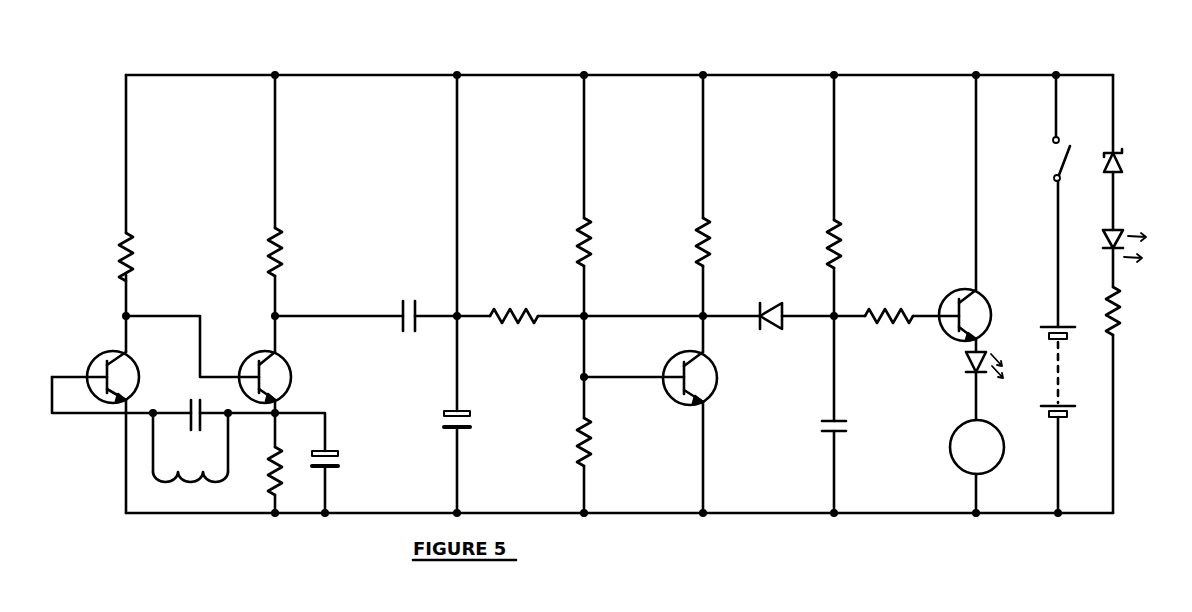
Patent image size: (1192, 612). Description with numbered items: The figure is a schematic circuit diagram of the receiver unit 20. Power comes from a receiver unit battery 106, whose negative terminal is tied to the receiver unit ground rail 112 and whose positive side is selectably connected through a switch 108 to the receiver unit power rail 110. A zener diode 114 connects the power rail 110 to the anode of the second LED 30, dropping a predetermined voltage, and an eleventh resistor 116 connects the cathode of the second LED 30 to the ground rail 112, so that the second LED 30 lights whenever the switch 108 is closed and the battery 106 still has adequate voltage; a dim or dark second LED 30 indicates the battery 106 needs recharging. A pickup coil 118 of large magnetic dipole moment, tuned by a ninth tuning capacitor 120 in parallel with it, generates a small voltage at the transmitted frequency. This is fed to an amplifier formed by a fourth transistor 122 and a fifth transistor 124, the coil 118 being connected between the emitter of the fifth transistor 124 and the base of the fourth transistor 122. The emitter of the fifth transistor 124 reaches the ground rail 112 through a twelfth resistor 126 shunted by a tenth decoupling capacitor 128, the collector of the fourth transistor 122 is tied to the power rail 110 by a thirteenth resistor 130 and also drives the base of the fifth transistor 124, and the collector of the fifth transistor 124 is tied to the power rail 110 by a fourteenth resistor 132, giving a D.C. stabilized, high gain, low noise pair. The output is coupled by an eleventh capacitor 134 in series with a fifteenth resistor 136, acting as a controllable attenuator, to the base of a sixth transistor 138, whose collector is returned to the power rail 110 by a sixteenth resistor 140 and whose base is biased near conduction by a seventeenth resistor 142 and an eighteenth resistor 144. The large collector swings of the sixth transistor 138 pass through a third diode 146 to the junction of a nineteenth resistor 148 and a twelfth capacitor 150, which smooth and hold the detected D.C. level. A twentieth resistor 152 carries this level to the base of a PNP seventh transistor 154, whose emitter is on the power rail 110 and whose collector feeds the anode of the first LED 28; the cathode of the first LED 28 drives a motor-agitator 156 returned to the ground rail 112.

The receiver unit 20 is at (380, 50).
The first LED 28 is at (963, 358).
The second LED 30 is at (1105, 237).
The receiver unit battery 106 is at (1058, 374).
The switch 108 is at (1046, 156).
The receiver unit power rail 110 is at (1093, 73).
The receiver unit ground rail 112 is at (1093, 514).
The zener diode 114 is at (1127, 150).
The eleventh resistor 116 is at (1122, 333).
The pickup coil 118 is at (180, 484).
The ninth tuning capacitor 120 is at (191, 402).
The fourth transistor 122 is at (97, 362).
The fifth transistor 124 is at (283, 375).
The twelfth resistor 126 is at (272, 468).
The tenth decoupling capacitor 128 is at (340, 468).
The thirteenth resistor 130 is at (140, 244).
The fourteenth resistor 132 is at (287, 241).
The eleventh capacitor 134 is at (405, 298).
The fifteenth resistor 136 is at (515, 306).
The sixth transistor 138 is at (712, 389).
The sixteenth resistor 140 is at (711, 263).
The seventeenth resistor 142 is at (603, 240).
The eighteenth resistor 144 is at (591, 449).
The third diode 146 is at (766, 304).
The nineteenth resistor 148 is at (843, 247).
The twelfth capacitor 150 is at (853, 430).
The twentieth resistor 152 is at (885, 304).
The seventh transistor 154 is at (982, 310).
The motor-agitator 156 is at (962, 456).